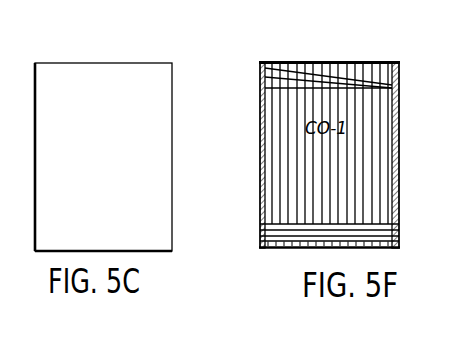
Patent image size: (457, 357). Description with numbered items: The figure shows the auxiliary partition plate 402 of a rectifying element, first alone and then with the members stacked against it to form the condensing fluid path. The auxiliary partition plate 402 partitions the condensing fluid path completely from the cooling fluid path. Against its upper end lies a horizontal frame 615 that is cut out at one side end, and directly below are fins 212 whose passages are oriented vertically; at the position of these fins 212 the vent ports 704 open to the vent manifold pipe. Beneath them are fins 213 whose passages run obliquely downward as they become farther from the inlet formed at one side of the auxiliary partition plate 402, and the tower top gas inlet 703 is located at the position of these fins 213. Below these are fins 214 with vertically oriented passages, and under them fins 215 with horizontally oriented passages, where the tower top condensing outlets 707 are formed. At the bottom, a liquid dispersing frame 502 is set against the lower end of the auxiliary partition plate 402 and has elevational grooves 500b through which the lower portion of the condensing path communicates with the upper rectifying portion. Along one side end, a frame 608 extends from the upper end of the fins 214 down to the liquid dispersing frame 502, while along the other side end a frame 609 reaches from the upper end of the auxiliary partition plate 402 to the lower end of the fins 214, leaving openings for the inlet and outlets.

In FIG. 5C, the auxiliary partition plate 402 is at (110, 150).
In FIG. 5F, the tower top gas inlet 703 is at (259, 71).
In FIG. 5F, the fins 213 is at (267, 80).
In FIG. 5F, the frame 608 is at (259, 112).
In FIG. 5F, the fins 214 is at (273, 140).
In FIG. 5F, the fins 215 is at (262, 232).
In FIG. 5F, the liquid dispersing frame 502 is at (260, 248).
In FIG. 5F, the grooves 500b is at (302, 250).
In FIG. 5F, the horizontal frame 615 is at (348, 47).
In FIG. 5F, the vent ports 704 is at (380, 59).
In FIG. 5F, the fins 212 is at (398, 75).
In FIG. 5F, the frame 609 is at (400, 142).
In FIG. 5F, the tower top condensing outlets 707 is at (400, 232).